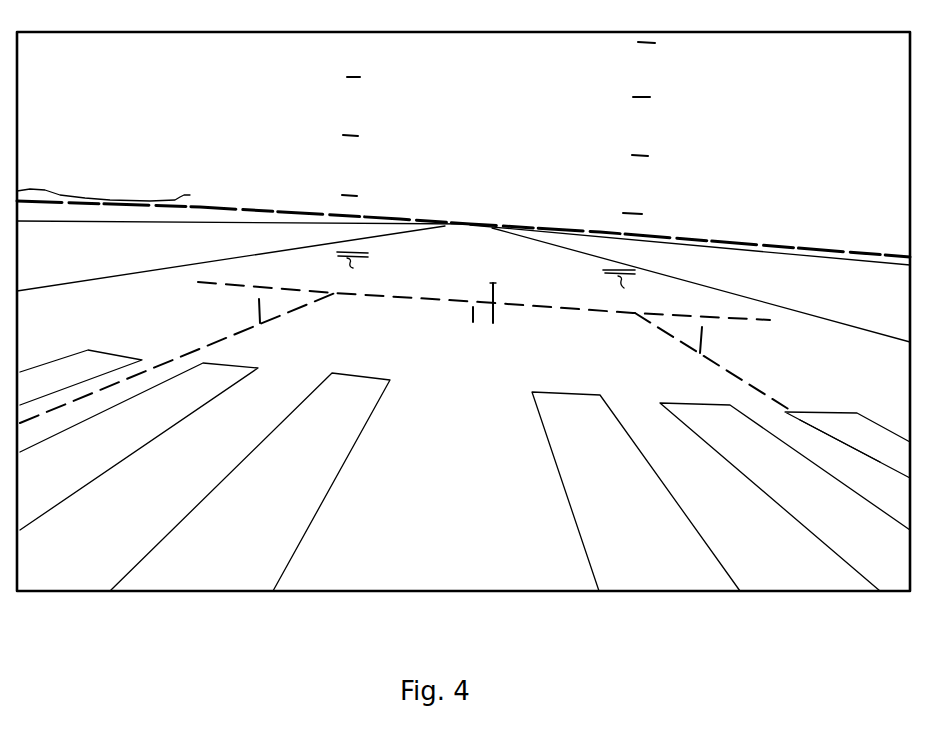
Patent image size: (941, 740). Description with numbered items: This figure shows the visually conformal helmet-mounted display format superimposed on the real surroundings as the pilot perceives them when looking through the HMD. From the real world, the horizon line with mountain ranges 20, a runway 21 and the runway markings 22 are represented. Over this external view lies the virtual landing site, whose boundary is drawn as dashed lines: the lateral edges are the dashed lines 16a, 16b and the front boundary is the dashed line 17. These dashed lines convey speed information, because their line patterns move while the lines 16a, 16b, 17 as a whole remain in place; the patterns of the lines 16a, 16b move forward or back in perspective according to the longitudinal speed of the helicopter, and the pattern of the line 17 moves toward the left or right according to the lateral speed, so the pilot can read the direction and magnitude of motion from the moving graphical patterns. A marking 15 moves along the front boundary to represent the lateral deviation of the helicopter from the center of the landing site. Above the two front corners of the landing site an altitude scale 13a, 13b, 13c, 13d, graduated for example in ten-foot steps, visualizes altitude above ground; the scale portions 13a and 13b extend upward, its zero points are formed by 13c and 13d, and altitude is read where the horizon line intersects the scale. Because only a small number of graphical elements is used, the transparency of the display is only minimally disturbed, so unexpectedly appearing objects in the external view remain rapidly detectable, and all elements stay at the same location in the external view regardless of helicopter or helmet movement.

The altitude scale 13a is at (396, 136).
The altitude scale 13b is at (677, 128).
The zero point of altitude scale 13c is at (347, 272).
The zero point of altitude scale 13d is at (618, 290).
The marking 15 is at (494, 288).
The dashed-line boundary line 16a is at (190, 352).
The dashed-line boundary line 16b is at (777, 403).
The dashed-line boundary line 17 is at (382, 293).
The horizon line with mountain ranges 20 is at (190, 195).
The runway 21 is at (717, 295).
The runway markings 22 is at (587, 507).